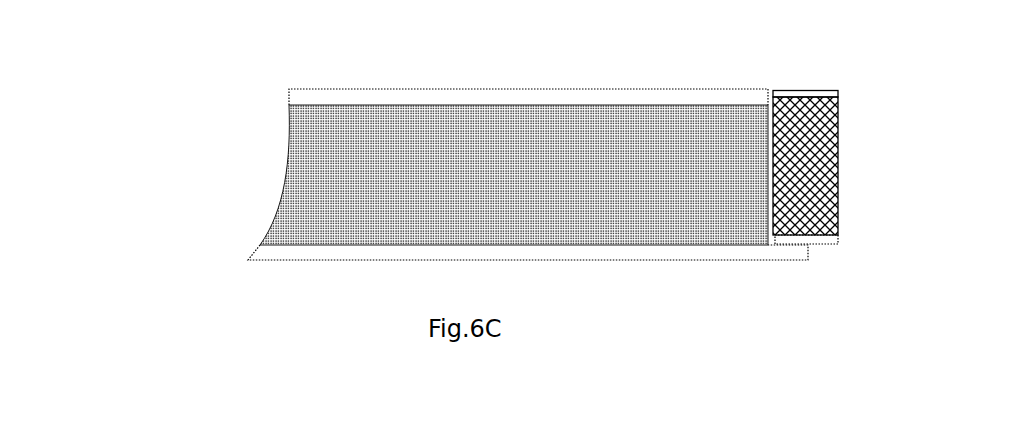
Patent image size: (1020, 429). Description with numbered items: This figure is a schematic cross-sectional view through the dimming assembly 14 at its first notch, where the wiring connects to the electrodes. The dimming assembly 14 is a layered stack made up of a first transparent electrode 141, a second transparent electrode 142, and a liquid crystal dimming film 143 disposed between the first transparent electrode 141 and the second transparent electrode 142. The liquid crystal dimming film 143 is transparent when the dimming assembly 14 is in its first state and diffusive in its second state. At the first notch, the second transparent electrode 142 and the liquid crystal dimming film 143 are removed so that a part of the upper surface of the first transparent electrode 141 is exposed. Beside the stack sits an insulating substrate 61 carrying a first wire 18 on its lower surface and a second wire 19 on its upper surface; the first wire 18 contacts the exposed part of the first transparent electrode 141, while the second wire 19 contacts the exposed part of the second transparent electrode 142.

The dimming assembly 14 is at (82, 23).
The first transparent electrode 141 is at (258, 249).
The second transparent electrode 142 is at (313, 93).
The liquid crystal dimming film 143 is at (300, 168).
The insulating substrate 61 is at (815, 187).
The first wire 18 is at (822, 243).
The second wire 19 is at (829, 90).